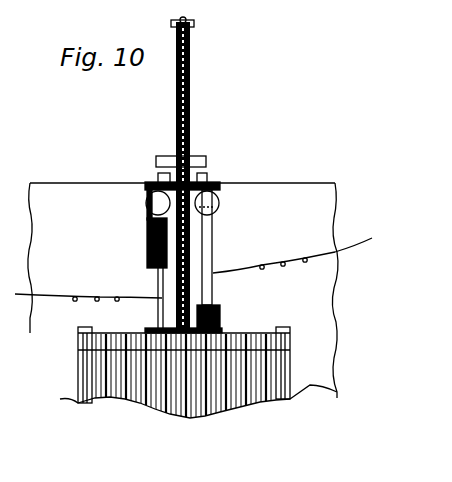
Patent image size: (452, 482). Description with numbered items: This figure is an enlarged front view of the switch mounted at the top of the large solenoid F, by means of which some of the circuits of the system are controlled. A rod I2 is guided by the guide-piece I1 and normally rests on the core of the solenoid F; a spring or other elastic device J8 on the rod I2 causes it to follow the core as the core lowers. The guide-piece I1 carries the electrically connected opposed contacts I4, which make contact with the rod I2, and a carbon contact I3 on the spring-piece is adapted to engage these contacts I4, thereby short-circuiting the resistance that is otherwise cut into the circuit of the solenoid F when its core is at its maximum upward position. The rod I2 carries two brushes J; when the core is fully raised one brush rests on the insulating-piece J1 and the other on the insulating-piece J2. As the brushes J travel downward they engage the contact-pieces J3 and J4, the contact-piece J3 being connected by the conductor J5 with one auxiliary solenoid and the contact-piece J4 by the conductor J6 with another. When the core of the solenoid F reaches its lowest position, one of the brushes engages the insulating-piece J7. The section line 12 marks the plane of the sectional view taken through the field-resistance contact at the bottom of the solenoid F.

The guide-piece I1 is at (150, 185).
The rod I2 is at (191, 97).
The carbon contact I3 is at (205, 158).
The opposed contacts I4 is at (158, 179).
The brushes J is at (146, 203).
The insulating-piece J1 is at (222, 185).
The insulating-piece J2 is at (147, 243).
The contact-piece J3 is at (214, 243).
The contact-piece J4 is at (160, 274).
The conductor J5 is at (354, 243).
The conductor J6 is at (48, 298).
The insulating-piece J7 is at (221, 318).
The spring J8 is at (178, 103).
The solenoid F is at (203, 415).
The section line 12 is at (448, 111).